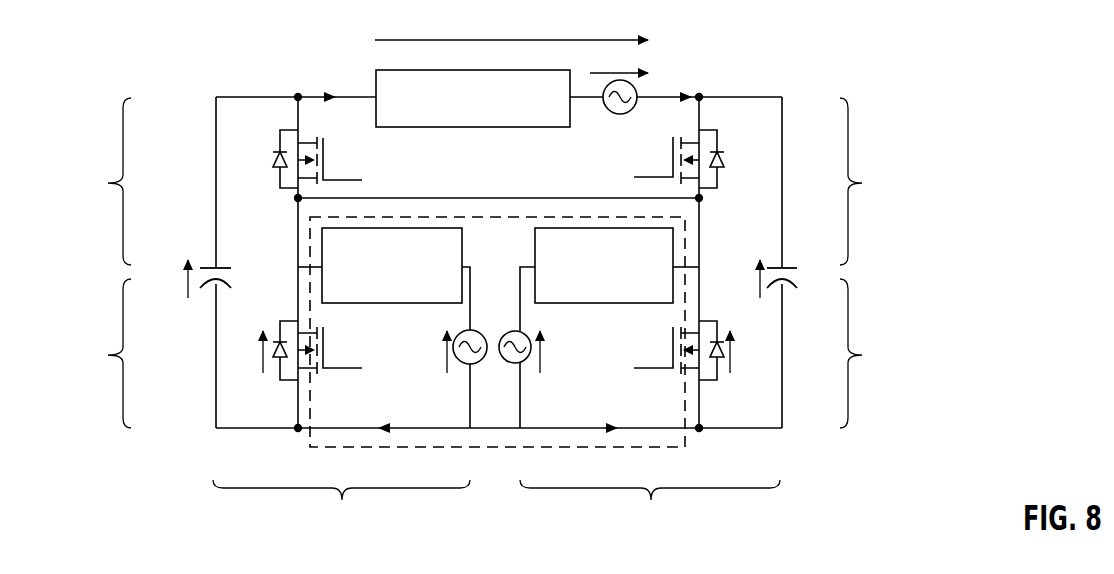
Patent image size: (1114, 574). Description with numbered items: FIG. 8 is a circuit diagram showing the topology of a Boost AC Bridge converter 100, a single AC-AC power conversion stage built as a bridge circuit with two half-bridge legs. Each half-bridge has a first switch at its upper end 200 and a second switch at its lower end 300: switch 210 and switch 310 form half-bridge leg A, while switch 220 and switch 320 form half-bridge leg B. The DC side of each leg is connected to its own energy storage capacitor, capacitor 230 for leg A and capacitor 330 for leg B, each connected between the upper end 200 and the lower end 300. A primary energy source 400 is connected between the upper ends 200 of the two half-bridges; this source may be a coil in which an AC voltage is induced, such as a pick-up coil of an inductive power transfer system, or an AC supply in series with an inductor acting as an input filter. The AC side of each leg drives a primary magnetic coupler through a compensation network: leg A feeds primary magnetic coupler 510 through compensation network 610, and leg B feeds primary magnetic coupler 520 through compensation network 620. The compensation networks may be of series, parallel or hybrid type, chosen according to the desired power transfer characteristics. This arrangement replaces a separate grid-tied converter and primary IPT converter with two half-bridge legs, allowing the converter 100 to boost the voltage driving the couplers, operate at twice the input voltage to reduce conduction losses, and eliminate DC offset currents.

The Boost AC Bridge converter 100 is at (337, 37).
The upper end 200 is at (484, 181).
The first switch 210 is at (274, 137).
The first switch 220 is at (713, 123).
The capacitor 230 is at (205, 263).
The lower end 300 is at (484, 353).
The second switch 310 is at (286, 386).
The second switch 320 is at (722, 380).
The capacitor 330 is at (768, 263).
The primary energy source 400 is at (640, 128).
The primary magnetic coupler 510 is at (329, 448).
The primary magnetic coupler 520 is at (675, 453).
The compensation network 610 is at (465, 242).
The compensation network 620 is at (606, 228).